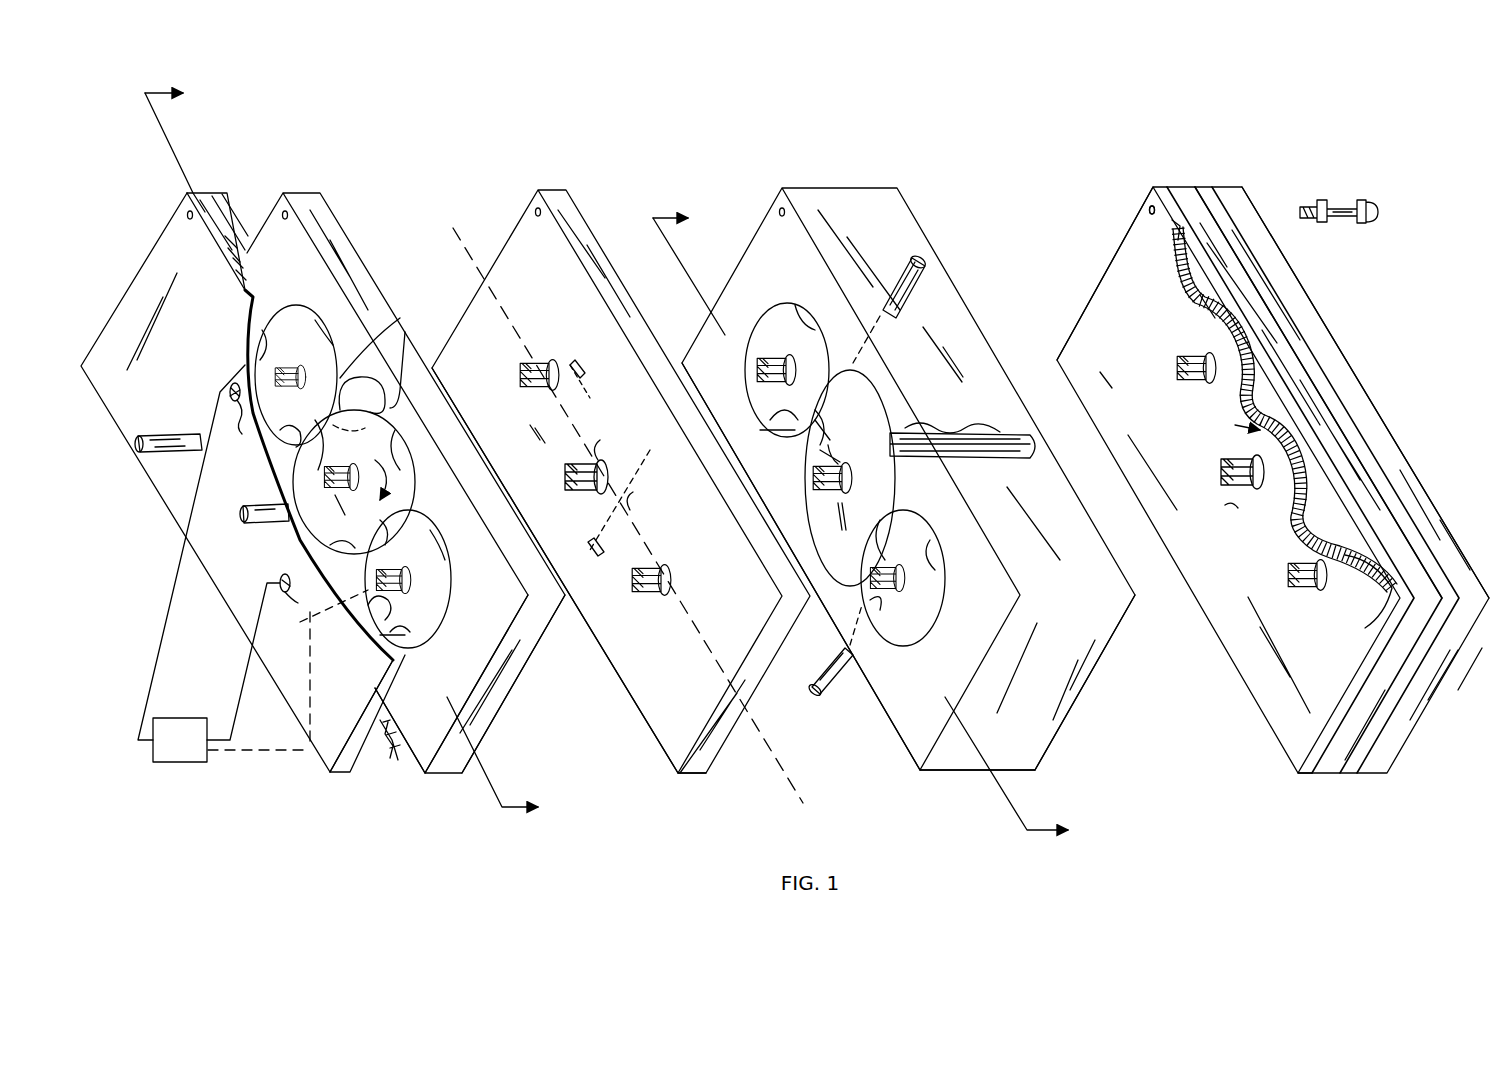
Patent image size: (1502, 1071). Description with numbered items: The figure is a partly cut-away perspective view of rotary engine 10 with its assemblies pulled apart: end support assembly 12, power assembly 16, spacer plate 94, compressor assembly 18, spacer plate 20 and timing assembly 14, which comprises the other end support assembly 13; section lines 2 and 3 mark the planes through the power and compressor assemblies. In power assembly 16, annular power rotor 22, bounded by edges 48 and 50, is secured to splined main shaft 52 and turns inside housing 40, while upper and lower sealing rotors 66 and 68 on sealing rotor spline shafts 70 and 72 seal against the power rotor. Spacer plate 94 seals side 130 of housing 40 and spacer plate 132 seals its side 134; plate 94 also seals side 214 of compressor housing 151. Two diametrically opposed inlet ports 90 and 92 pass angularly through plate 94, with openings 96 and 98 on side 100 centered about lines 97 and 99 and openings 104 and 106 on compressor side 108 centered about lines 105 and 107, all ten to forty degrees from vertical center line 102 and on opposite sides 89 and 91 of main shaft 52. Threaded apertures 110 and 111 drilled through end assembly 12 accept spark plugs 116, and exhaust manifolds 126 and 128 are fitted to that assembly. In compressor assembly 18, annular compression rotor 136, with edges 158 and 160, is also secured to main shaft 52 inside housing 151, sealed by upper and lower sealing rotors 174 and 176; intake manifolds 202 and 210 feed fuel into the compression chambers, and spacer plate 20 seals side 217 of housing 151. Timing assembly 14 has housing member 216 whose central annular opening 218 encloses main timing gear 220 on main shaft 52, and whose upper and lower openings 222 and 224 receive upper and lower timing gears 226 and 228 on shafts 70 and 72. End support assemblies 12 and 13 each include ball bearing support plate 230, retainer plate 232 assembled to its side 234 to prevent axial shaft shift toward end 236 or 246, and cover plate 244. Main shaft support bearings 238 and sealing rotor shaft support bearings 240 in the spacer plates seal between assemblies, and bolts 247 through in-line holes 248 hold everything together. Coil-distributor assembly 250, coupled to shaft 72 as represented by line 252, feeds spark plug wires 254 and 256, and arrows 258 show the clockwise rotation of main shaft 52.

The rotary engine 10 is at (480, 859).
The end support assembly 12 is at (134, 290).
The end support assembly 13 is at (1200, 190).
The timing assembly 14 is at (1332, 328).
The power assembly 16 is at (298, 190).
The compressor assembly 18 is at (826, 182).
The spacer plate 20 is at (1160, 186).
The power rotor 22 is at (315, 526).
The section line 2 is at (353, 449).
The section line 3 is at (874, 523).
The housing 40 is at (478, 750).
The edge 48 is at (411, 367).
The edge 50 is at (383, 340).
The splined main shaft 52 is at (329, 467).
The upper sealing rotor 66 is at (281, 344).
The lower sealing rotor 68 is at (413, 609).
The upper sealing rotor spline shaft 70 is at (297, 386).
The lower sealing rotor spline shaft 72 is at (404, 568).
The side of main shaft 89 is at (586, 422).
The inlet port 90 is at (575, 408).
The side of main shaft 91 is at (601, 512).
The inlet port 92 is at (649, 512).
The spacer plate 94 is at (553, 190).
The opening 96 is at (588, 376).
The line 97 is at (572, 357).
The opening 98 is at (590, 548).
The line 99 is at (612, 556).
The side of plate 100 is at (652, 716).
The vertical center line 102 is at (468, 268).
The opening 104 is at (532, 440).
The line 105 is at (528, 420).
The opening 106 is at (640, 470).
The line 107 is at (644, 490).
The compressor side 108 is at (718, 768).
The threaded aperture 110 is at (232, 385).
The threaded aperture 111 is at (304, 603).
The spark plugs 116 is at (238, 414).
The exhaust manifold 126 is at (258, 502).
The exhaust manifold 128 is at (180, 432).
The side of housing 130 is at (505, 712).
The spacer plate 132 is at (386, 770).
The side of housing 134 is at (428, 765).
The compression rotor 136 is at (828, 448).
The housing 151 is at (960, 778).
The edge 158 is at (885, 420).
The opposite edge 160 is at (1030, 430).
The upper sealing rotor 174 is at (783, 409).
The lower sealing rotor 176 is at (878, 546).
The intake manifold 202 is at (905, 305).
The intake manifold 210 is at (820, 665).
The side of housing 214 is at (898, 722).
The housing member 216 is at (1325, 780).
The side of compressor housing 217 is at (1053, 755).
The central annular opening 218 is at (1270, 395).
The main timing gear 220 is at (1255, 446).
The upper annular opening 222 is at (1196, 292).
The lower annular opening 224 is at (1366, 627).
The upper timing gear 226 is at (1205, 330).
The lower timing gear 228 is at (1312, 543).
The ball bearing support plate 230 is at (356, 785).
The retainer plate 232 is at (345, 778).
The side of bearing support plate 234 is at (338, 775).
The end of engine 236 is at (240, 637).
The main shaft support bearings 238 is at (928, 477).
The sealing rotor shaft support bearings 240 is at (540, 388).
The cover plate 244 is at (333, 671).
The end of engine 246 is at (1398, 432).
The bolts 247 is at (1379, 210).
The in-line holes 248 is at (1148, 208).
The coil-distributor assembly 250 is at (178, 764).
The line 252 is at (303, 760).
The spark plug wire 254 is at (248, 664).
The spark plug wire 256 is at (157, 640).
The arrows 258 is at (1258, 438).